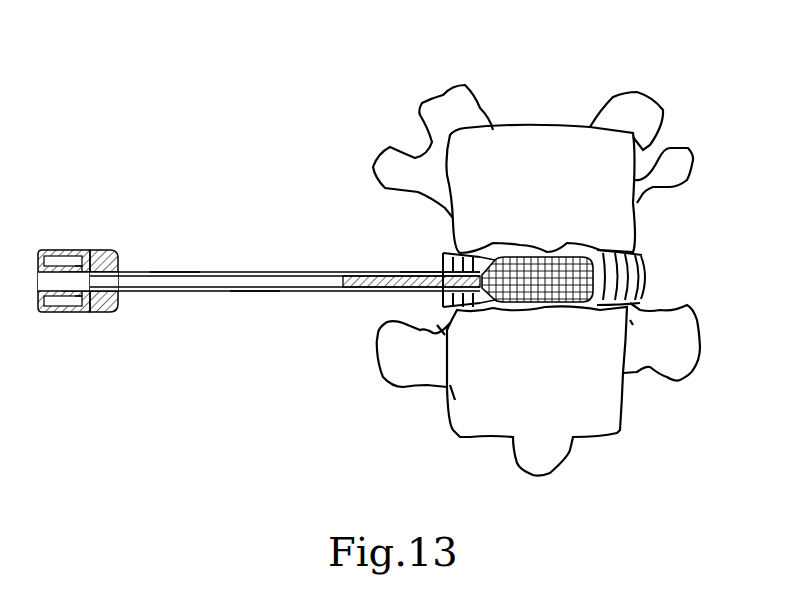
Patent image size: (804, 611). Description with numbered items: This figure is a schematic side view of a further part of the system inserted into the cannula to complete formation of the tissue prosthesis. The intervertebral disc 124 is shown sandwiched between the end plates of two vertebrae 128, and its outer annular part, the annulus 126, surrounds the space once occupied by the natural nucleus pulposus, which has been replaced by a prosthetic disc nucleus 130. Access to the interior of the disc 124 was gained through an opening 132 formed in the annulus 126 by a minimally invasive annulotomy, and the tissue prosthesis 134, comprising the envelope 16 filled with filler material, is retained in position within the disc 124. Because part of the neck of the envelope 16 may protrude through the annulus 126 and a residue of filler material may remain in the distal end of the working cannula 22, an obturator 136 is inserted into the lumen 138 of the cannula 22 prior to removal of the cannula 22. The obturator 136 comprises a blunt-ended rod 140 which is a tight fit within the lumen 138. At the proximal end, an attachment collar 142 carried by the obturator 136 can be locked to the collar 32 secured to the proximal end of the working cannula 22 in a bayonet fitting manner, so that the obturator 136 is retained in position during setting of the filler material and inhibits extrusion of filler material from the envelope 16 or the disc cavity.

The envelope 16 is at (567, 246).
The working cannula 22 is at (200, 292).
The first collar 32 is at (103, 251).
The intervertebral disc 124 is at (653, 285).
The annulus fibrosis 126 is at (646, 267).
The vertebrae 128 is at (552, 124).
The prosthetic disc nucleus 130 is at (590, 309).
The opening 132 is at (428, 269).
The tissue prosthesis 134 is at (492, 315).
The obturator 136 is at (250, 293).
The lumen 138 is at (171, 271).
The blunt-ended rod 140 is at (408, 294).
The attachment collar 142 is at (42, 313).